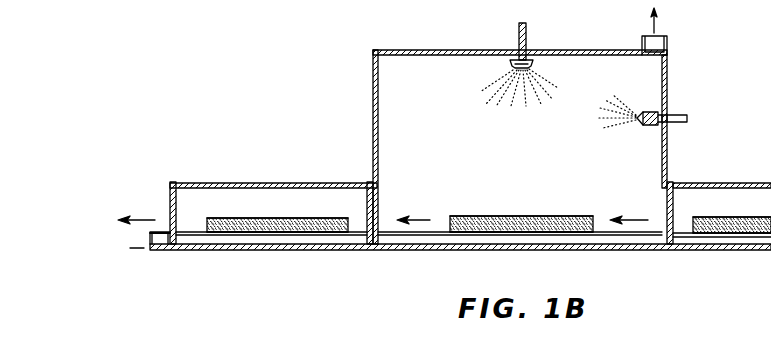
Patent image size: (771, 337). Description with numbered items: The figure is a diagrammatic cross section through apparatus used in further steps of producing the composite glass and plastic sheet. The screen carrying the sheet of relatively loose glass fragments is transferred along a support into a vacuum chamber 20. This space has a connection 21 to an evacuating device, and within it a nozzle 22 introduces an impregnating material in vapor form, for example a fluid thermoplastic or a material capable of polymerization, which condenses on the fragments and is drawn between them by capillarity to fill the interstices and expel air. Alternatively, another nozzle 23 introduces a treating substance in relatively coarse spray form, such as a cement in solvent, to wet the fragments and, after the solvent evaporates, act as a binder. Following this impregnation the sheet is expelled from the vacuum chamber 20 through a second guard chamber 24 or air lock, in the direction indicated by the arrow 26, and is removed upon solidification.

The vacuum chamber 20 is at (520, 147).
The connection 21 is at (660, 49).
The nozzle 22 is at (680, 115).
The nozzle 23 is at (526, 33).
The second guard chamber 24 is at (253, 197).
The arrow 26 is at (141, 220).